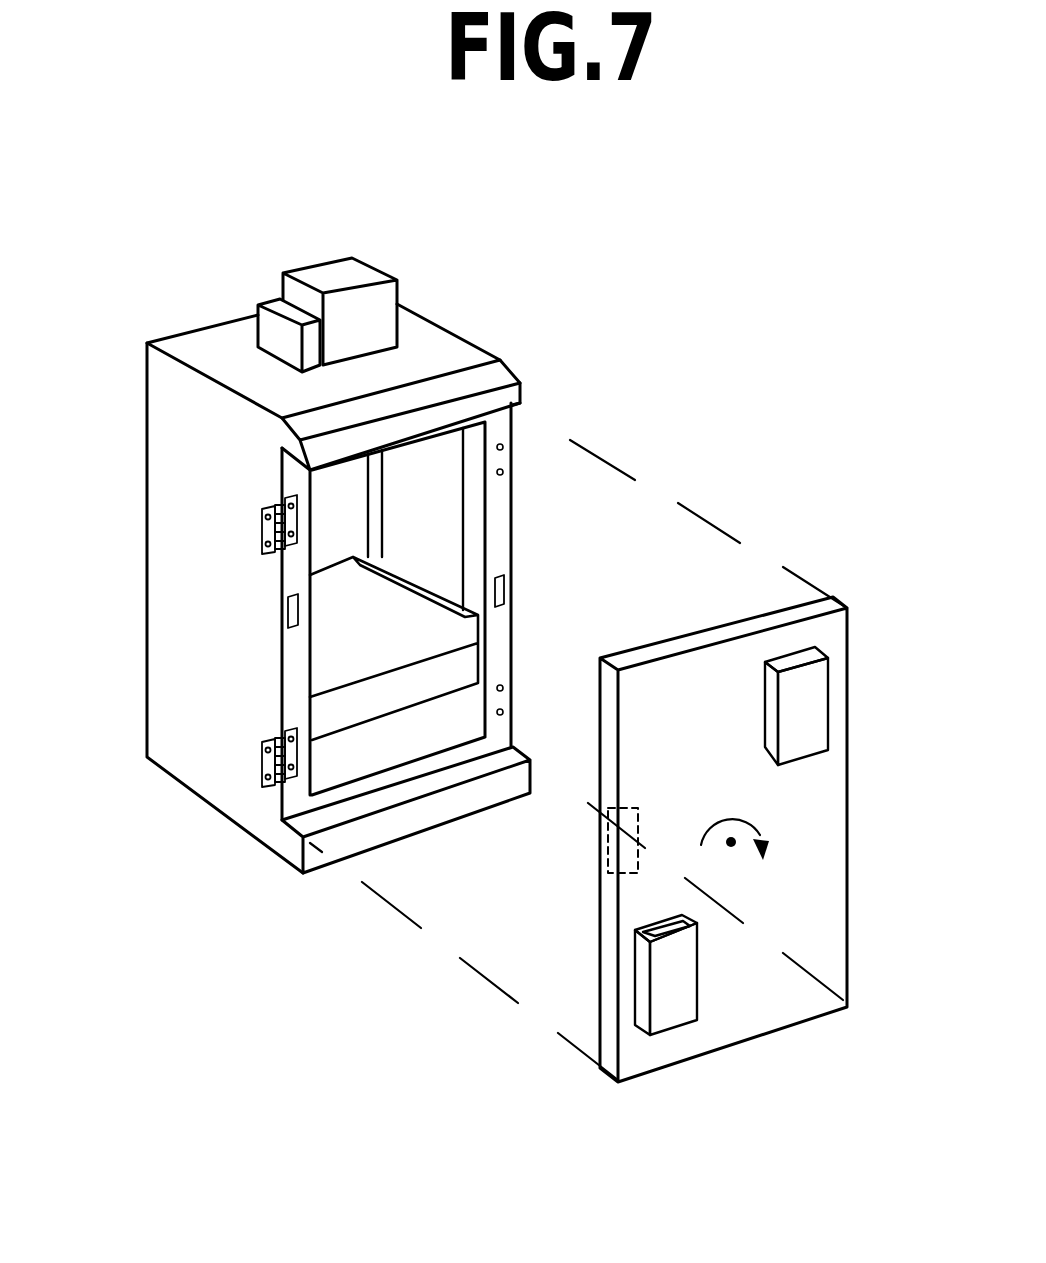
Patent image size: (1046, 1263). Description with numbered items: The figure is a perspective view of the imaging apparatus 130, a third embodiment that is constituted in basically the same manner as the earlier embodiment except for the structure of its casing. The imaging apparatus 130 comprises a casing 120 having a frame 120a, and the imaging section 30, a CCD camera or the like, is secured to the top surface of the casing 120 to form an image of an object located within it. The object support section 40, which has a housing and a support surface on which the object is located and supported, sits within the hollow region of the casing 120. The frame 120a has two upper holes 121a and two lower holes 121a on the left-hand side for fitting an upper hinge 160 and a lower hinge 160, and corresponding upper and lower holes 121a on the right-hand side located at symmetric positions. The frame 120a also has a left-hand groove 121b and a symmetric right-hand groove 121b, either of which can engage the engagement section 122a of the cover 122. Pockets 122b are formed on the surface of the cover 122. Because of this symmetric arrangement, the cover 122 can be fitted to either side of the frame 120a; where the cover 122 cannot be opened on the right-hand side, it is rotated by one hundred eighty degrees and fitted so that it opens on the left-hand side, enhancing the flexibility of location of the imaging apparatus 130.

The imaging apparatus 130 is at (389, 206).
The imaging section 30 is at (318, 273).
The casing 120 is at (456, 334).
The frame 120a is at (528, 412).
The holes 121a is at (503, 448).
The groove 121b is at (288, 612).
The hinge 160 is at (262, 530).
The object support section 40 is at (347, 703).
The cover 122 is at (836, 635).
The engagement section 122a is at (612, 848).
The pockets 122b is at (817, 713).